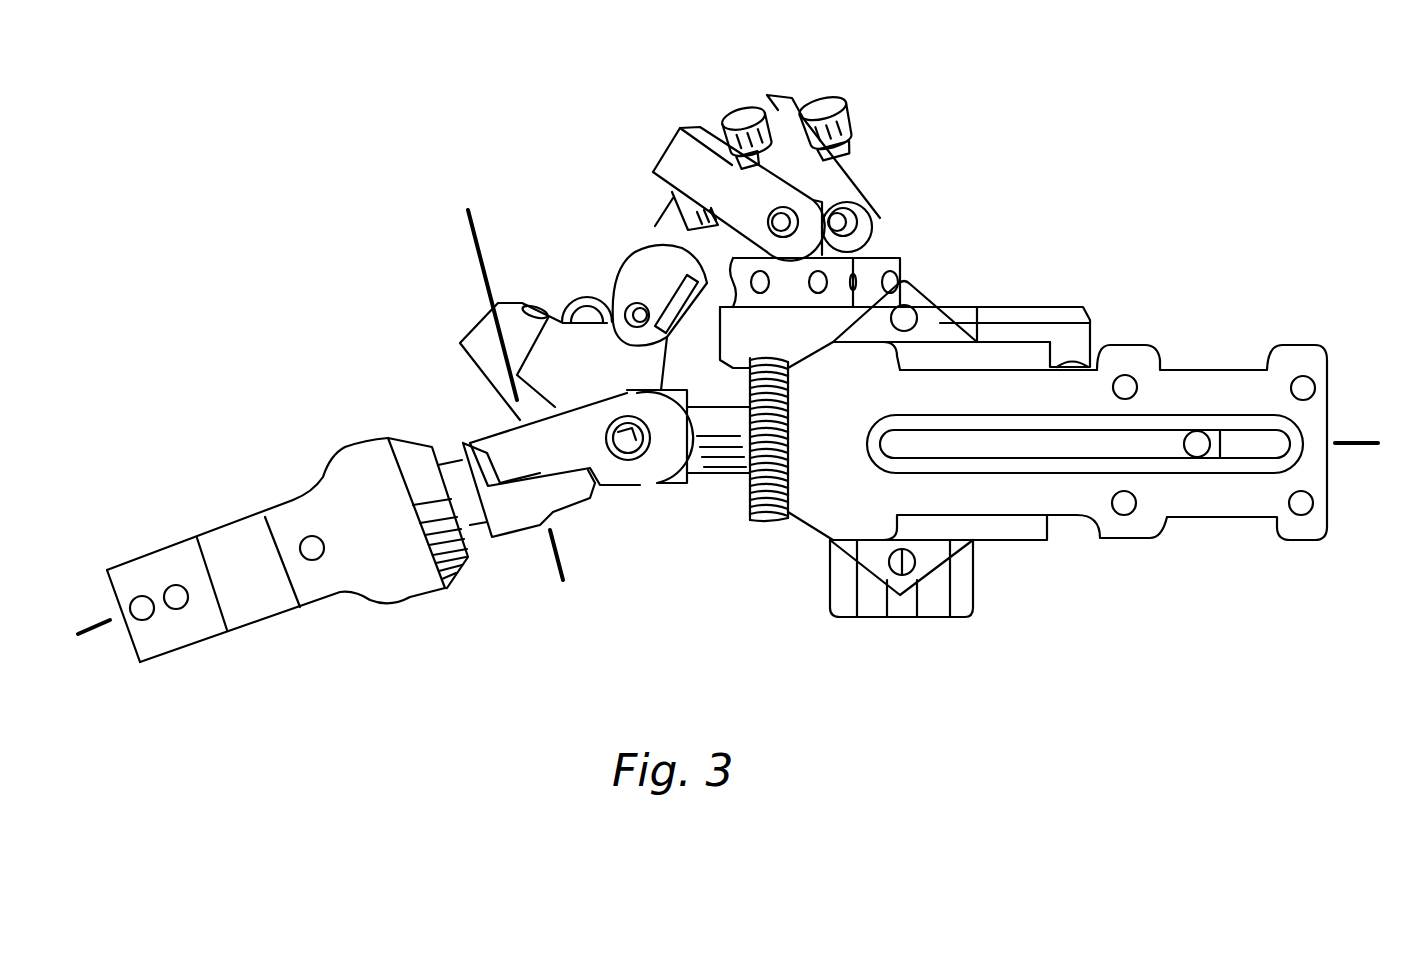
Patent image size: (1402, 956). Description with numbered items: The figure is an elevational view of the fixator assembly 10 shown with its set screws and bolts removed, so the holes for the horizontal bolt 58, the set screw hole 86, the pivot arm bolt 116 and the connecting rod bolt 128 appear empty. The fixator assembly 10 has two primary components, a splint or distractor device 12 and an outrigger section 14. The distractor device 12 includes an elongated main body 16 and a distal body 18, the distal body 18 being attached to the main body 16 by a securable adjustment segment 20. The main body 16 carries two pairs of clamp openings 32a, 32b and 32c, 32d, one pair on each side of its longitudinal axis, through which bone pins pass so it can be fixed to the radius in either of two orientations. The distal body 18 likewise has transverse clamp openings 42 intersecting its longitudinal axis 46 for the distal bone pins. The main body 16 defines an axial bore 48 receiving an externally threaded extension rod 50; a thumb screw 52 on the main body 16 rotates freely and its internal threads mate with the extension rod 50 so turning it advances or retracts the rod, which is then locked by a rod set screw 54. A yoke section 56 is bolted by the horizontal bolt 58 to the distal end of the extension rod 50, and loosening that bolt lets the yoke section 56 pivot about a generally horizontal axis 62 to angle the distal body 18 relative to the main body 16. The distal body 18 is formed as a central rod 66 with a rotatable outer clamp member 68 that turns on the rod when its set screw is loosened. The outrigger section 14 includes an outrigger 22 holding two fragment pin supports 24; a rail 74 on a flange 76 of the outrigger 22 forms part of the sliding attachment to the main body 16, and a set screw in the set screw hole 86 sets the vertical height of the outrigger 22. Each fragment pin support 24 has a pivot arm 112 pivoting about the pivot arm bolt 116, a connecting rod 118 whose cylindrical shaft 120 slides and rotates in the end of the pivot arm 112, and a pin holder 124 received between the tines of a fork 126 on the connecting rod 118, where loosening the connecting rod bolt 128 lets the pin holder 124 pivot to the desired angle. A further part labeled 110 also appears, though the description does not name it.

The fixator assembly 10 is at (440, 128).
The distractor device 12 is at (1240, 348).
The outrigger section 14 is at (1047, 300).
The main body 16 is at (1108, 530).
The distal body 18 is at (342, 585).
The securable adjustment segment 20 is at (678, 477).
The outrigger 22 is at (1075, 312).
The fragment pin support 24 is at (677, 158).
The clamp opening 32a is at (1125, 375).
The clamp opening 32b is at (1305, 385).
The clamp opening 32c is at (1126, 508).
The clamp opening 32d is at (1301, 508).
The transverse clamp openings 42 is at (180, 612).
The longitudinal axis 46 is at (100, 635).
The bore 48 is at (1243, 446).
The extension rod 50 is at (943, 460).
The thumb screw 52 is at (763, 508).
The rod set screw 54 is at (1197, 448).
The yoke section 56 is at (598, 482).
The horizontal bolt 58 is at (640, 447).
The horizontal axis 62 is at (488, 262).
The central rod 66 is at (470, 522).
The rotatable outer clamp member 68 is at (410, 578).
The rail 74 is at (895, 605).
The flange 76 is at (901, 600).
The set screw hole 86 is at (918, 323).
The block 110 is at (902, 262).
The pivot arm 112 is at (813, 177).
The pivot arm bolt 116 is at (850, 232).
The connecting rod 118 is at (835, 109).
The cylindrical shaft 120 is at (690, 213).
The pin holder 124 is at (505, 312).
The fork 126 is at (652, 262).
The connecting rod bolt 128 is at (634, 300).